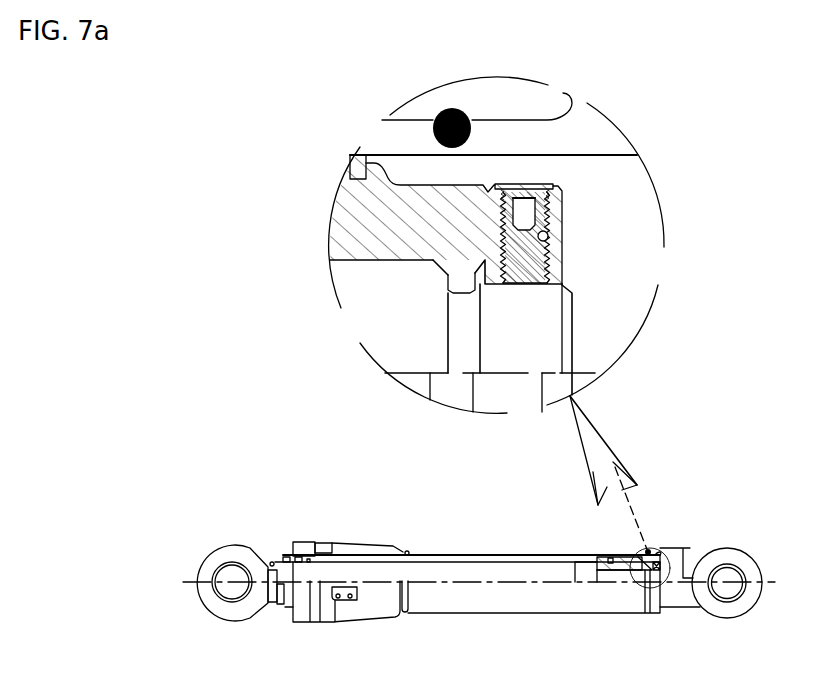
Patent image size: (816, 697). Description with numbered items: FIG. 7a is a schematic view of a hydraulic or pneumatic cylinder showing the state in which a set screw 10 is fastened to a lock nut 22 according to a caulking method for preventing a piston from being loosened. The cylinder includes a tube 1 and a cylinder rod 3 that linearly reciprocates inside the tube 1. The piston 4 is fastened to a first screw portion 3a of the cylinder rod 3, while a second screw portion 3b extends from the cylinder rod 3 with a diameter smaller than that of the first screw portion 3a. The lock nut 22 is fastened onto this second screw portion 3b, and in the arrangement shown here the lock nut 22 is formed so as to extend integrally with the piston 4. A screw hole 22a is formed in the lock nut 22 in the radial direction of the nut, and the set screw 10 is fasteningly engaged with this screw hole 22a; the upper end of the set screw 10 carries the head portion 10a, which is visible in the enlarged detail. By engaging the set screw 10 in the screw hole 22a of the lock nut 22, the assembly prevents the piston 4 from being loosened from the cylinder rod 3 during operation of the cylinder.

The tube 1 is at (507, 553).
The cylinder rod 3 is at (525, 648).
The first screw portion 3a is at (373, 258).
The second screw portion 3b is at (563, 278).
The piston 4 is at (378, 218).
The set screw 10 is at (537, 262).
The screw head socket 10a is at (530, 208).
The lock nut 22 is at (558, 207).
The screw hole 22a is at (548, 243).